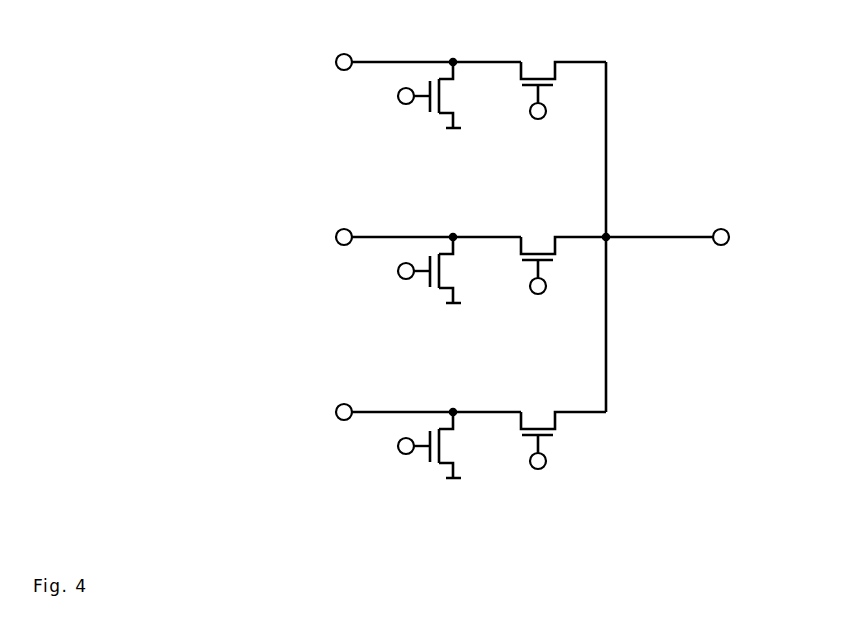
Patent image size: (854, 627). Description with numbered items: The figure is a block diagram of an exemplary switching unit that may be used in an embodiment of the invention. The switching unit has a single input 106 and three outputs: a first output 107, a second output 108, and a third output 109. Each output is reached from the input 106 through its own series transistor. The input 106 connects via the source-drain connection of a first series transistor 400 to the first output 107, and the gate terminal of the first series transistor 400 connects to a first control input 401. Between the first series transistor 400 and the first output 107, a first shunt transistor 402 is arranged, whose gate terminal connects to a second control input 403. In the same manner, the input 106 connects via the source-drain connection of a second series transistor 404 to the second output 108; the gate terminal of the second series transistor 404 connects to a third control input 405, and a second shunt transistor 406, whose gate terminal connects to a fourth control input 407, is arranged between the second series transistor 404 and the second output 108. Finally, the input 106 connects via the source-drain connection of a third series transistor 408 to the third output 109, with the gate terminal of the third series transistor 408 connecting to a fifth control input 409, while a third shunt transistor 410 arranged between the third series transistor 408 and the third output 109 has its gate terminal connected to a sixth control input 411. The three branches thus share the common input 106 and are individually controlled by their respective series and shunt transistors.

The input 106 is at (718, 230).
The first output 107 is at (332, 62).
The second output 108 is at (332, 237).
The third output 109 is at (332, 412).
The first series transistor 400 is at (538, 62).
The first control input 401 is at (535, 122).
The first shunt transistor 402 is at (433, 120).
The second control input 403 is at (397, 97).
The second series transistor 404 is at (538, 237).
The third control input 405 is at (535, 297).
The second shunt transistor 406 is at (433, 295).
The fourth control input 407 is at (397, 272).
The third series transistor 408 is at (538, 412).
The fifth control input 409 is at (535, 472).
The third shunt transistor 410 is at (433, 470).
The sixth control input 411 is at (397, 447).